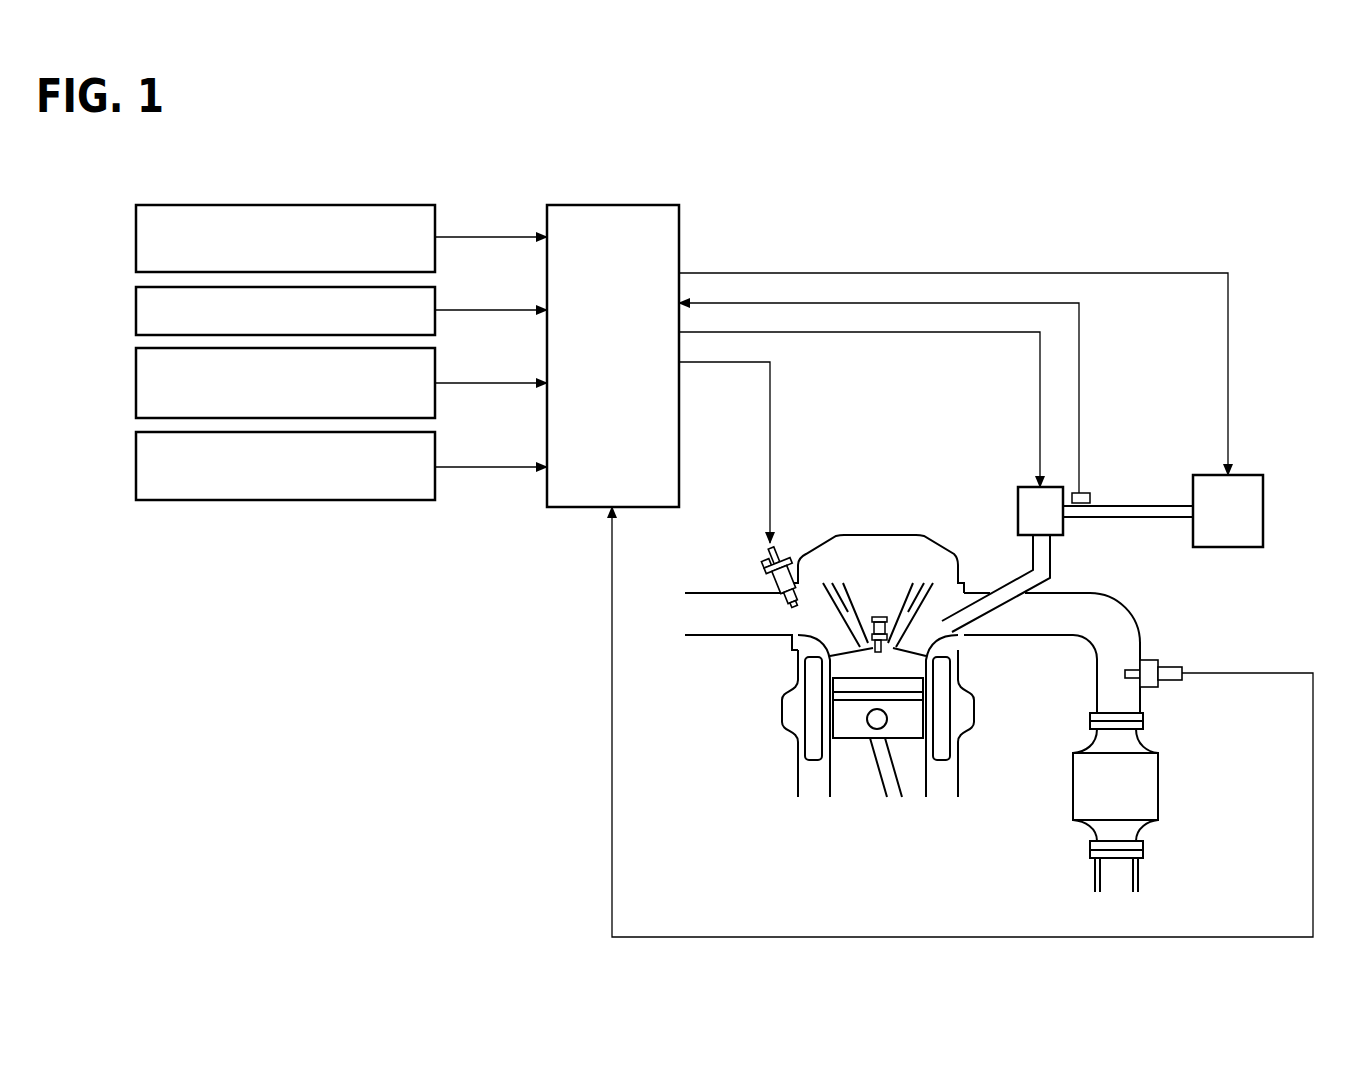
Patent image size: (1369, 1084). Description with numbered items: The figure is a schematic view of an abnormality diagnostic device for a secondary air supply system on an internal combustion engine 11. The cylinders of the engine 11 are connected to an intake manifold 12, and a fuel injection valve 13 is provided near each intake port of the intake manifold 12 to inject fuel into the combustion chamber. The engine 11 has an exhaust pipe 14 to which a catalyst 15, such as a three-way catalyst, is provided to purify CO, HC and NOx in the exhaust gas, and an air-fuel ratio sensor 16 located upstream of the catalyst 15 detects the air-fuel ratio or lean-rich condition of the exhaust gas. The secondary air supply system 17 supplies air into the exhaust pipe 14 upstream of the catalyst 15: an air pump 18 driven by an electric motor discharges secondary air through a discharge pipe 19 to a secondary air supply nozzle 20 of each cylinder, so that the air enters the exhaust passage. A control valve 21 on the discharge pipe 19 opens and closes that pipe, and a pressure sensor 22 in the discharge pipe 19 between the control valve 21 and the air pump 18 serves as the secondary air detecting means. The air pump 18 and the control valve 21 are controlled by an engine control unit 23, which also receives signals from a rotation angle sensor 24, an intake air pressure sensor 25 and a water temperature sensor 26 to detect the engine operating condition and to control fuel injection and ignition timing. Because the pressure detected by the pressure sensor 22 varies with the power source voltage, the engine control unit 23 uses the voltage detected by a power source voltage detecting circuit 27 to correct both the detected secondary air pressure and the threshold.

The internal combustion engine 11 is at (768, 729).
The intake manifold 12 is at (722, 640).
The fuel injection valve 13 is at (778, 568).
The exhaust pipe 14 is at (1081, 647).
The catalyst 15 is at (1158, 781).
The air-fuel ratio sensor 16 is at (1170, 660).
The secondary air supply system 17 is at (1246, 449).
The air pump 18 is at (1263, 511).
The discharge pipe 19 is at (1132, 520).
The secondary air supply nozzle 20 is at (989, 627).
The control valve 21 is at (1018, 510).
The pressure sensor 22 is at (1093, 498).
The engine control unit 23 is at (622, 205).
The rotation angle sensor 24 is at (136, 306).
The intake air pressure sensor 25 is at (136, 376).
The water temperature sensor 26 is at (136, 460).
The power source voltage detecting circuit 27 is at (136, 231).